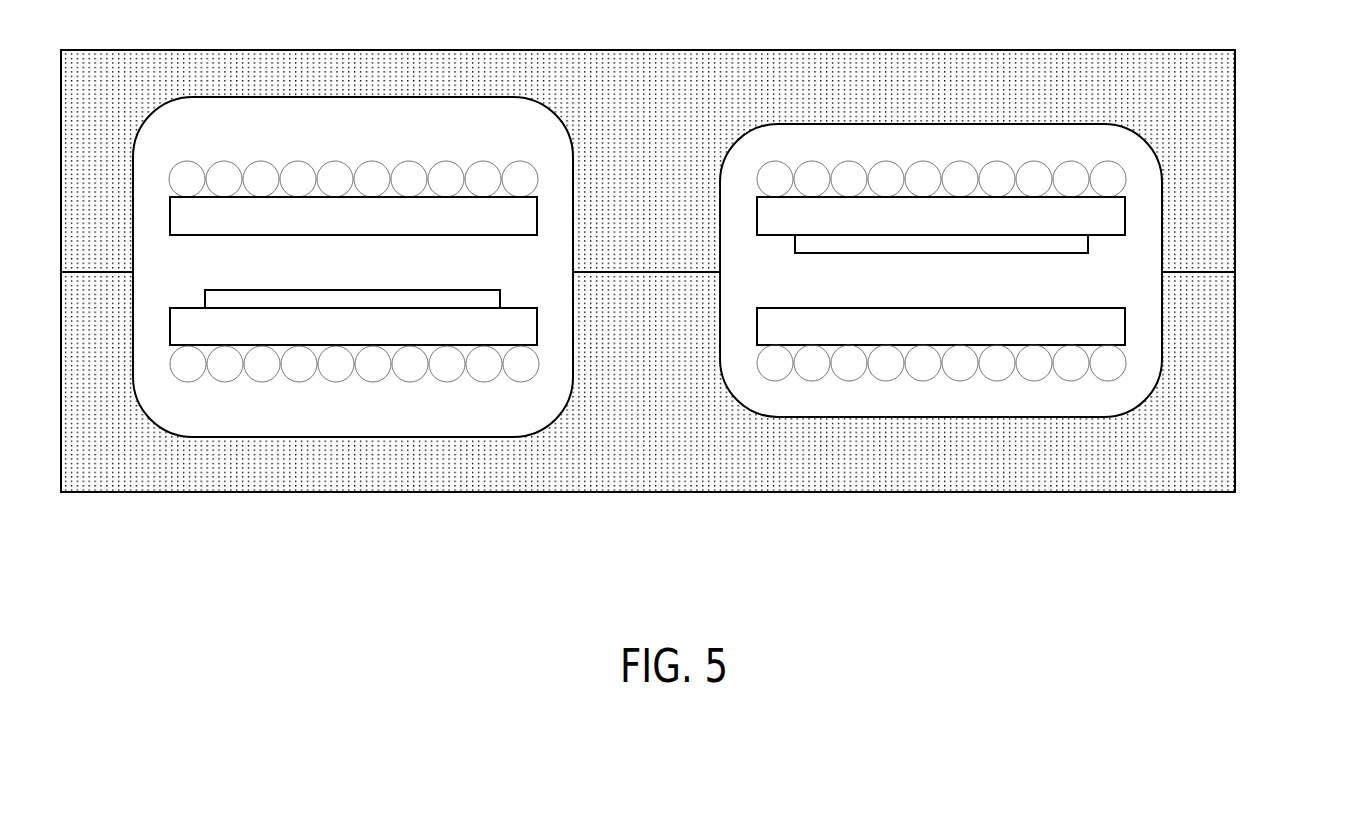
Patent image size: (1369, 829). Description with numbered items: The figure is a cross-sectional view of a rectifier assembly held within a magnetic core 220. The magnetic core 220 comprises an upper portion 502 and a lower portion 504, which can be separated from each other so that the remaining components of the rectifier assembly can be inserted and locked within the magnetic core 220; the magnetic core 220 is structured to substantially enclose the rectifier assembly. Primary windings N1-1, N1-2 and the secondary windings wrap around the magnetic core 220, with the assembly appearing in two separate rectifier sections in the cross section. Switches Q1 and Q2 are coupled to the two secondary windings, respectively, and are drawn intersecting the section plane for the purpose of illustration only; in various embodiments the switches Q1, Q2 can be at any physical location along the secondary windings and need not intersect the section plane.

The magnetic core 220 is at (757, 50).
The upper portion 502 is at (1223, 144).
The lower portion 504 is at (1223, 412).
The primary winding N1-1 is at (187, 161).
The primary winding N1-2 is at (188, 382).
The switch Q1 is at (429, 290).
The switch Q2 is at (977, 253).